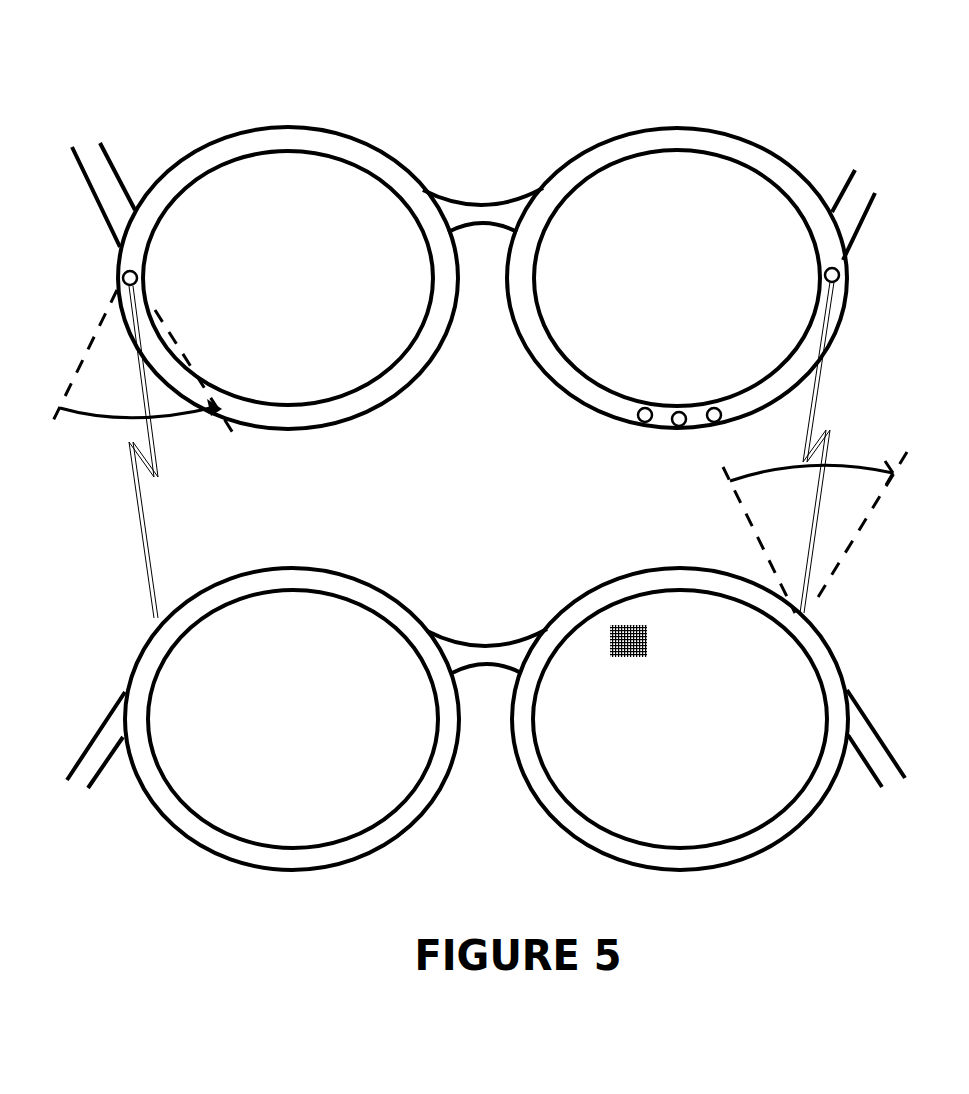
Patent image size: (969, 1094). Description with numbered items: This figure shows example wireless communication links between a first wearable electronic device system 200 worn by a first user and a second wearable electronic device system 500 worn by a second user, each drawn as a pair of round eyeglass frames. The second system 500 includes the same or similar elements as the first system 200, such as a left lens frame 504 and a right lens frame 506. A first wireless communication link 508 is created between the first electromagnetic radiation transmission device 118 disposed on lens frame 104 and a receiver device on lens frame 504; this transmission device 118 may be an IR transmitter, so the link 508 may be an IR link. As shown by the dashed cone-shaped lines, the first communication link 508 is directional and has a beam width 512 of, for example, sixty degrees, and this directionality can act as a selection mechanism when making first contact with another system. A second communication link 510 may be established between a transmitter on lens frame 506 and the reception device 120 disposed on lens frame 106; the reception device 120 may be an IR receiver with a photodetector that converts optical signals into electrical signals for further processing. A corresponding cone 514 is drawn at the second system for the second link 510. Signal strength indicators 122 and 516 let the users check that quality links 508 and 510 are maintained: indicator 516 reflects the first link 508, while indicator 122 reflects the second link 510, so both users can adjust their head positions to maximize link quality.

The first wearable electronic device system 200 is at (467, 265).
The lens frame 104 is at (222, 138).
The lens frame 106 is at (650, 128).
The first electromagnetic radiation transmission device 118 is at (125, 270).
The reception device 120 is at (843, 282).
The signal strength indicator 122 is at (708, 428).
The first wireless communication link 508 is at (143, 518).
The second communication link 510 is at (817, 383).
The beam width 512 is at (88, 417).
The second signal range / field 514 is at (732, 480).
The second wearable electronic device system 500 is at (486, 748).
The left lens frame 504 is at (173, 827).
The right lens frame 506 is at (660, 863).
The signal strength indicator 516 is at (627, 657).